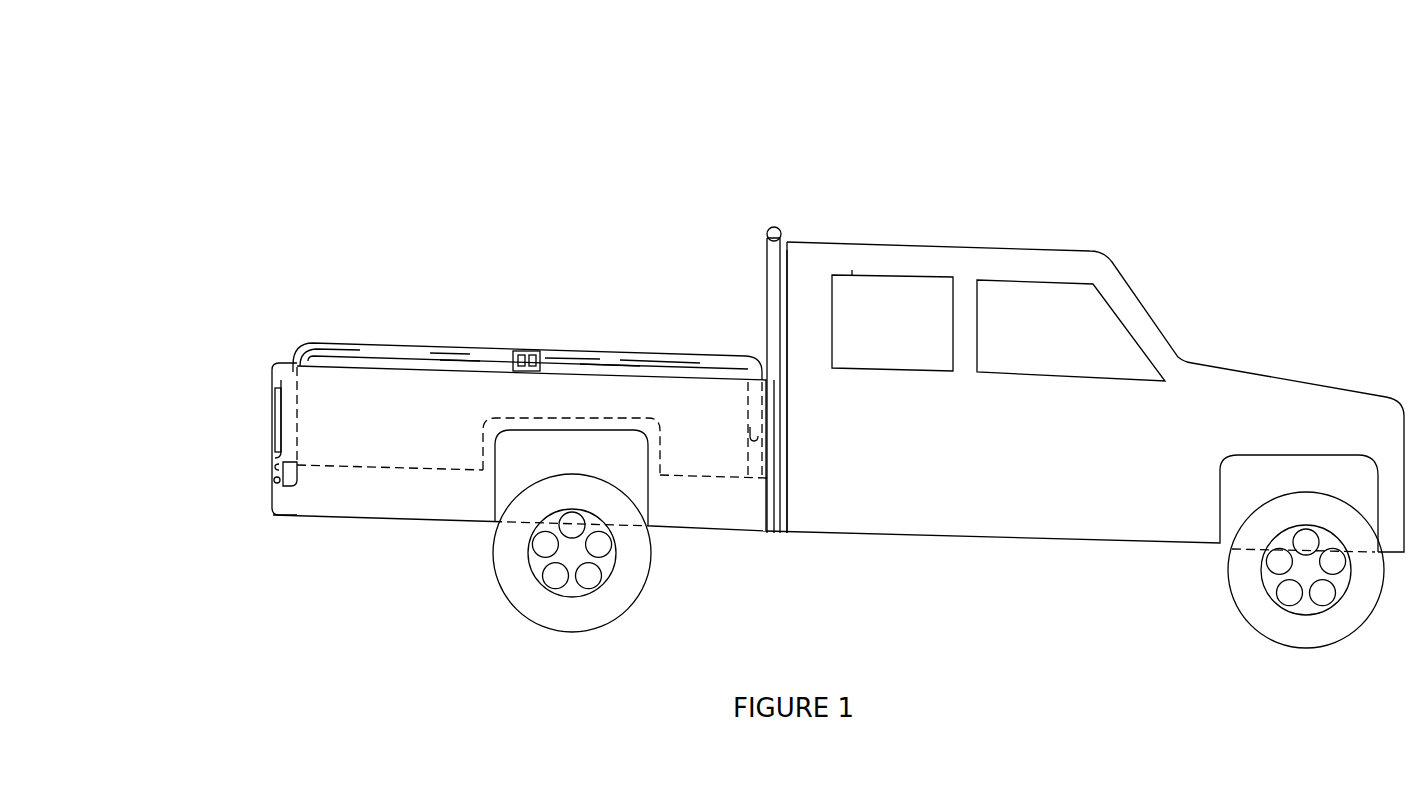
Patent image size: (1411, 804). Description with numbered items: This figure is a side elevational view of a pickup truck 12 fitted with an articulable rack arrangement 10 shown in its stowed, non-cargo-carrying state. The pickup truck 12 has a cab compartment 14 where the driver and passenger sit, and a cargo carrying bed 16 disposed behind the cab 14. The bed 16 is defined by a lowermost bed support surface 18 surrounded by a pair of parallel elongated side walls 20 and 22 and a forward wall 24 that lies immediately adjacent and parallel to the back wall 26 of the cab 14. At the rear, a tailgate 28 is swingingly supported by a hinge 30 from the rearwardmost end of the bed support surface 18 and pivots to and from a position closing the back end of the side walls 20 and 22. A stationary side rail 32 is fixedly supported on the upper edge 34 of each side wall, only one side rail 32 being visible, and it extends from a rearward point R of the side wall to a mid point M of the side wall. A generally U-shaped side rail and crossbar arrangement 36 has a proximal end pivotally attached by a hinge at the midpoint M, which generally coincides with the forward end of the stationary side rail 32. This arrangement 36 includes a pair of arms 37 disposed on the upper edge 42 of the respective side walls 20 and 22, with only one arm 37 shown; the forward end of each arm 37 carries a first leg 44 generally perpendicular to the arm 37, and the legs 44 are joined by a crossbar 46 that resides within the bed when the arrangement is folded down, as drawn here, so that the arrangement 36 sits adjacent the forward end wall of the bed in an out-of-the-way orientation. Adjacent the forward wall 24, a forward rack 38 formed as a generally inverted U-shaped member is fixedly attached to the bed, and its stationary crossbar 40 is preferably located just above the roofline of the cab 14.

The articulable rack arrangement 10 is at (675, 352).
The pickup truck 12 is at (1221, 366).
The cab compartment 14 is at (1018, 270).
The cargo carrying bed 16 is at (412, 428).
The bed support surface 18 is at (337, 467).
The side wall 20 is at (450, 378).
The side wall 22 is at (465, 378).
The forward wall 24 is at (773, 435).
The back wall of the cab 26 is at (786, 312).
The tailgate 28 is at (273, 369).
The hinge 30 is at (274, 482).
The stationary side rail 32 is at (367, 342).
The upper edge 34 is at (399, 346).
The U-shaped side rail and crossbar arrangement 36 is at (605, 366).
The arm 37 is at (647, 362).
The forward rack 38 is at (772, 258).
The stationary crossbar 40 is at (778, 225).
The upper edge 42 is at (568, 365).
The first leg 44 is at (740, 408).
The crossbar 46 is at (747, 439).
The rearward point R is at (291, 357).
The mid point M is at (507, 361).